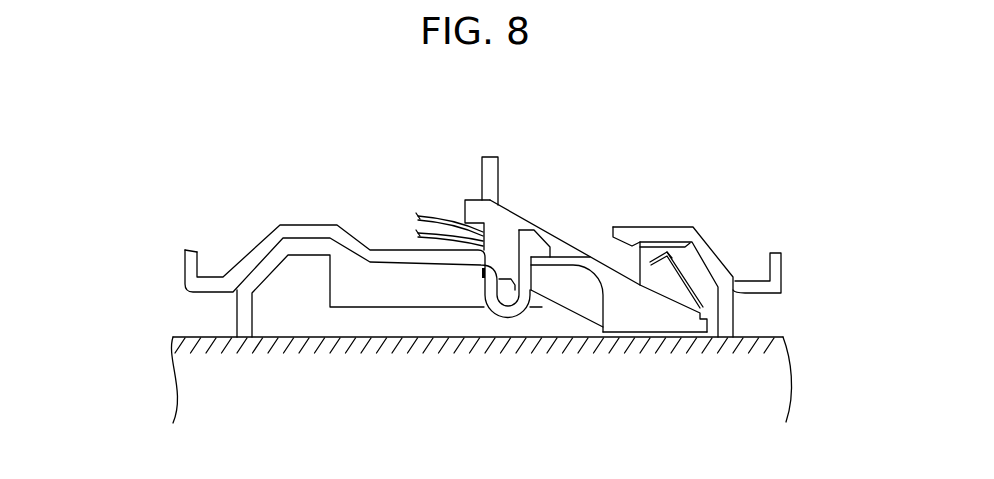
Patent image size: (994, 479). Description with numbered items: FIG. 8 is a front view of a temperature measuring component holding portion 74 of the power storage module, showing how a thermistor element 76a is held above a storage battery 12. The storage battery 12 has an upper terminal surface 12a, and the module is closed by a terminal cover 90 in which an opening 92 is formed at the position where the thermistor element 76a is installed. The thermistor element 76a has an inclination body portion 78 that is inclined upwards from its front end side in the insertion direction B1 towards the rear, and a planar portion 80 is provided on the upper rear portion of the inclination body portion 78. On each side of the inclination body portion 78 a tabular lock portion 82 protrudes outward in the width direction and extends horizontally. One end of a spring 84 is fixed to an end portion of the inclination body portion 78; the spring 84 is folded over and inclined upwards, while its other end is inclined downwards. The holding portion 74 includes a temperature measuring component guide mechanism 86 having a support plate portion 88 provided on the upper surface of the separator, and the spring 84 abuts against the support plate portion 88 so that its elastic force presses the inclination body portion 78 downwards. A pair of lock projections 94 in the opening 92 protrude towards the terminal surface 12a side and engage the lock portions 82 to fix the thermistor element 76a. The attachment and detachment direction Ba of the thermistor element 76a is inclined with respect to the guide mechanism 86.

The storage battery 12 is at (285, 331).
The terminal surface 12a is at (217, 337).
The temperature measuring component holding portion 74 is at (373, 128).
The thermistor element 76a is at (520, 192).
The inclination body portion 78 is at (585, 312).
The planar portion 80 is at (492, 156).
The lock portion 82 is at (556, 260).
The spring 84 is at (673, 256).
The temperature measuring component guide mechanism 86 is at (651, 234).
The support plate portion 88 is at (677, 251).
The terminal cover 90 is at (315, 218).
The opening 92 is at (618, 242).
The lock projection 94 is at (536, 240).
The attachment and detachment direction Ba is at (441, 200).
The insertion direction B1 is at (438, 413).